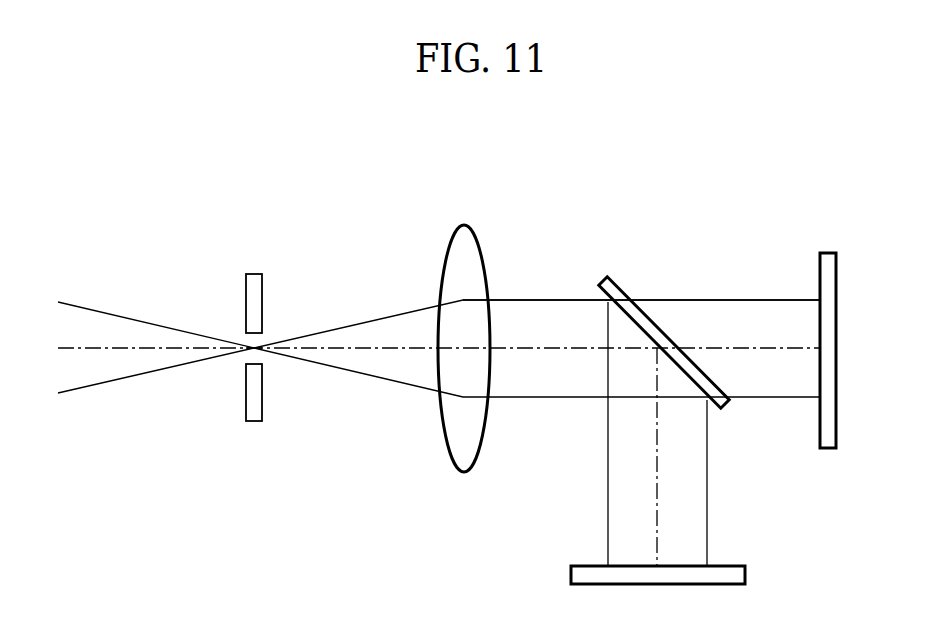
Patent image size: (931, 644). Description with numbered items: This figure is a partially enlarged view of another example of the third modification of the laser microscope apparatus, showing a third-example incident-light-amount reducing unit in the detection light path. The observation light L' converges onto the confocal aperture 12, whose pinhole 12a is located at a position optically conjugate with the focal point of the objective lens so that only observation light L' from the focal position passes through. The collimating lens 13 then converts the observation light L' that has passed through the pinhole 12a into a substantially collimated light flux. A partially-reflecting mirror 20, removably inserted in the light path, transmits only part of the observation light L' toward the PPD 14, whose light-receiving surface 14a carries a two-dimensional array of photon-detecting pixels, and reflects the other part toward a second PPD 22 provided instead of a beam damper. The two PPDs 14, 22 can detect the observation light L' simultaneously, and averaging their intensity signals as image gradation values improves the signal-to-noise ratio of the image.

The confocal aperture 12 is at (251, 273).
The pinhole 12a is at (242, 357).
The collimating lens 13 is at (463, 225).
The observation light L' is at (641, 256).
The partially-reflecting mirror 20 is at (623, 287).
The PPD (pixelated photon detector, photo-detection unit) 14 is at (827, 250).
The light-receiving surface 14a is at (817, 422).
The PPD (sub photo-detection unit) 22 is at (571, 571).